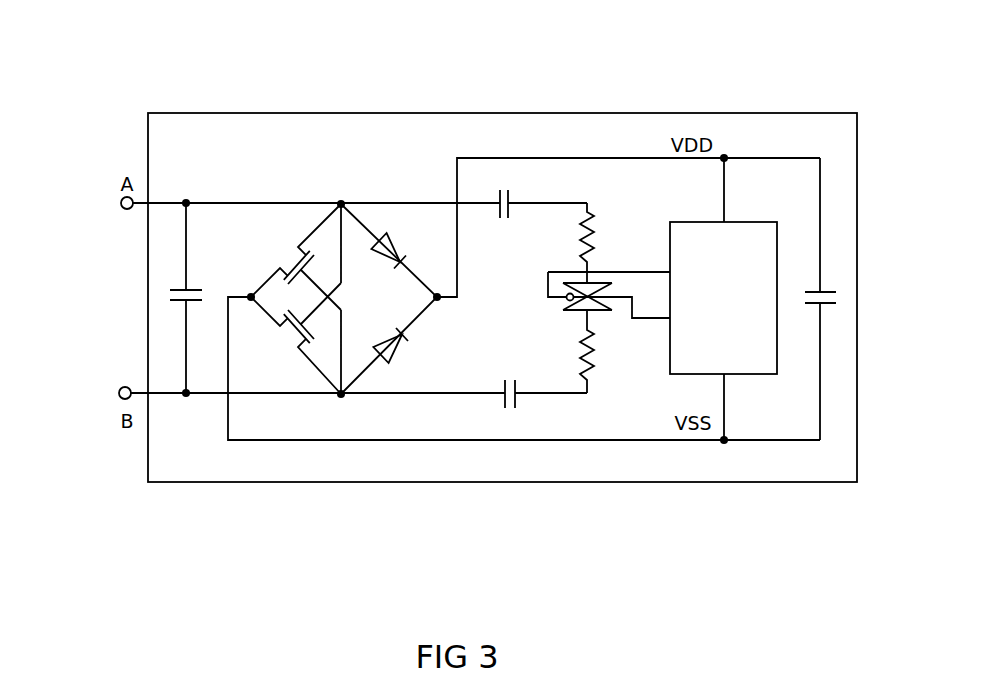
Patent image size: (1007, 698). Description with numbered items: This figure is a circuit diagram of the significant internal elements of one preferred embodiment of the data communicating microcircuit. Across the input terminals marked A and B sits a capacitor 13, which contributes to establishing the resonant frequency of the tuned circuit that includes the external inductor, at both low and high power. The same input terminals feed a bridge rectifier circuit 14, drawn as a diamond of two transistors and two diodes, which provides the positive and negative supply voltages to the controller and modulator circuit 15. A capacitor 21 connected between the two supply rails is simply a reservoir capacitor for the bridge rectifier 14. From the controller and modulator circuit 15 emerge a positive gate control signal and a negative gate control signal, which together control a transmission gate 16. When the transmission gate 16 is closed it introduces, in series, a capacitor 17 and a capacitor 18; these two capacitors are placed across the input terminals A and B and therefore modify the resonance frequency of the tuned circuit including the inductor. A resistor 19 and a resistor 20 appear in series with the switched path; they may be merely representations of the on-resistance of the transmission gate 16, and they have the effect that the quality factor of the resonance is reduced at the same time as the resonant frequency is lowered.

The capacitor 13 is at (182, 287).
The bridge rectifier circuit 14 is at (330, 217).
The controller and modulator (CAM) circuit 15 is at (747, 222).
The transmission gate 16 is at (517, 402).
The capacitor 17 is at (565, 302).
The capacitor 18 is at (510, 196).
The resistor 19 is at (597, 357).
The resistor 20 is at (600, 232).
The capacitor 21 is at (830, 292).